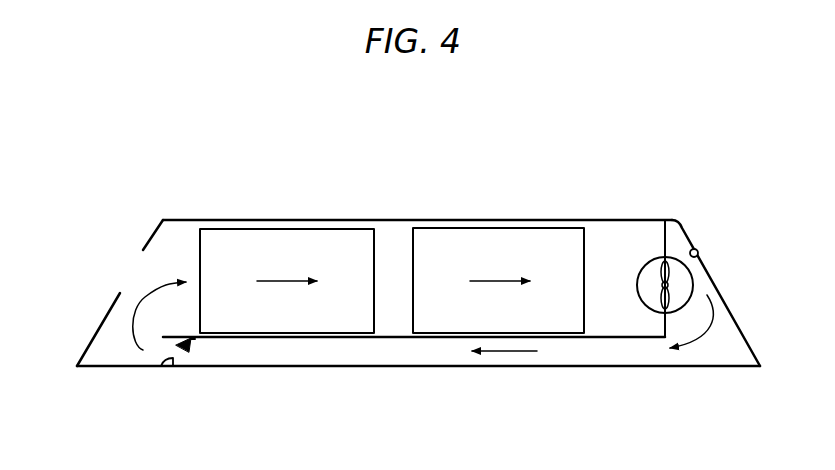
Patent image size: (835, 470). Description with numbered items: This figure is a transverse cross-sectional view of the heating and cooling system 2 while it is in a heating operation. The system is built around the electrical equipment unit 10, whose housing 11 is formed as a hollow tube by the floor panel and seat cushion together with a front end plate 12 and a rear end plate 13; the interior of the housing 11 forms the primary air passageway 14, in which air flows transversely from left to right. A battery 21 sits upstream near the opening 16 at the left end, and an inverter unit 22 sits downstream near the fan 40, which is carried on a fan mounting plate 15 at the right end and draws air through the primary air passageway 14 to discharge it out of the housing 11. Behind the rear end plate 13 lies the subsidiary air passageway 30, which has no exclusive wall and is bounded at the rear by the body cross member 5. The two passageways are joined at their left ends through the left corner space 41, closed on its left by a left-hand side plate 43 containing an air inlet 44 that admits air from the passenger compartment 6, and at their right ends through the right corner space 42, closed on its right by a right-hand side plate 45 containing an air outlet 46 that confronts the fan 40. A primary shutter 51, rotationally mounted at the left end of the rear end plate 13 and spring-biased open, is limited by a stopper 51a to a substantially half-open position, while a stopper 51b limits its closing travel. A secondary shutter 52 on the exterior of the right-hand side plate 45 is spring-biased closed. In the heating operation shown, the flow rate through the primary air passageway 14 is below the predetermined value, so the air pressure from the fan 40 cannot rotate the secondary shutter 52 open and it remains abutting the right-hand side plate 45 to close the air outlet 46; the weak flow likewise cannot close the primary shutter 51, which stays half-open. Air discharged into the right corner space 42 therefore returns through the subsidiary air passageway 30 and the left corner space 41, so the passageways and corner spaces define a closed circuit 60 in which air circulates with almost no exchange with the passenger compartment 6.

The heating and cooling system 2 is at (447, 162).
The body cross member 5 is at (333, 366).
The passenger compartment 6 is at (63, 241).
The electrical equipment unit 10 is at (344, 220).
The housing 11 is at (482, 220).
The front end plate 12 is at (390, 220).
The rear end plate 13 is at (388, 339).
The primary air passageway 14 is at (607, 240).
The fan mounting plate 15 is at (677, 230).
The opening 16 is at (178, 243).
The battery 21 is at (263, 227).
The inverter unit 22 is at (522, 228).
The subsidiary air passageway 30 is at (440, 350).
The fan 40 is at (642, 263).
The left corner space 41 is at (118, 340).
The right corner space 42 is at (740, 347).
The left-hand side plate 43 is at (100, 322).
The air inlet 44 is at (140, 258).
The right-hand side plate 45 is at (748, 333).
The air outlet 46 is at (718, 310).
The primary shutter 51 is at (182, 346).
The stopper 51a is at (195, 342).
The stopper 51b is at (163, 363).
The secondary shutter 52 is at (717, 282).
The closed circuit 60 is at (567, 350).